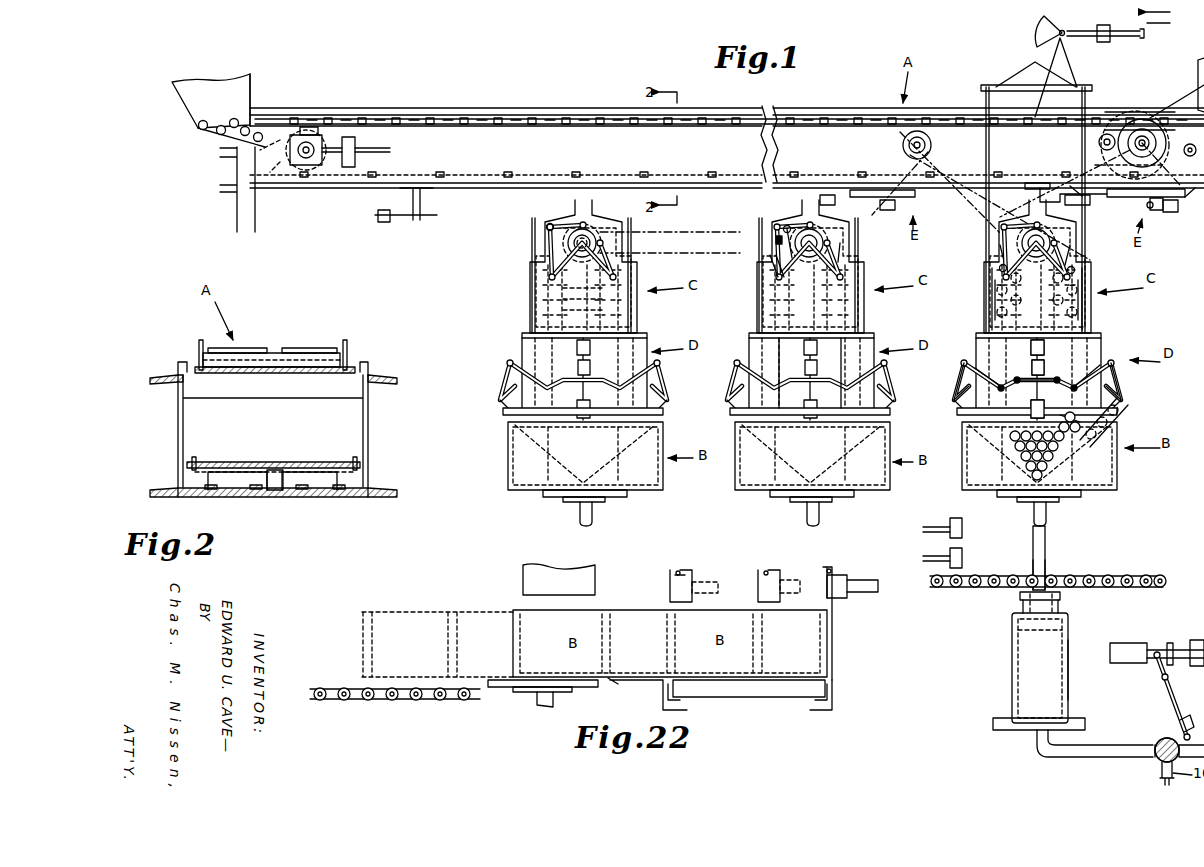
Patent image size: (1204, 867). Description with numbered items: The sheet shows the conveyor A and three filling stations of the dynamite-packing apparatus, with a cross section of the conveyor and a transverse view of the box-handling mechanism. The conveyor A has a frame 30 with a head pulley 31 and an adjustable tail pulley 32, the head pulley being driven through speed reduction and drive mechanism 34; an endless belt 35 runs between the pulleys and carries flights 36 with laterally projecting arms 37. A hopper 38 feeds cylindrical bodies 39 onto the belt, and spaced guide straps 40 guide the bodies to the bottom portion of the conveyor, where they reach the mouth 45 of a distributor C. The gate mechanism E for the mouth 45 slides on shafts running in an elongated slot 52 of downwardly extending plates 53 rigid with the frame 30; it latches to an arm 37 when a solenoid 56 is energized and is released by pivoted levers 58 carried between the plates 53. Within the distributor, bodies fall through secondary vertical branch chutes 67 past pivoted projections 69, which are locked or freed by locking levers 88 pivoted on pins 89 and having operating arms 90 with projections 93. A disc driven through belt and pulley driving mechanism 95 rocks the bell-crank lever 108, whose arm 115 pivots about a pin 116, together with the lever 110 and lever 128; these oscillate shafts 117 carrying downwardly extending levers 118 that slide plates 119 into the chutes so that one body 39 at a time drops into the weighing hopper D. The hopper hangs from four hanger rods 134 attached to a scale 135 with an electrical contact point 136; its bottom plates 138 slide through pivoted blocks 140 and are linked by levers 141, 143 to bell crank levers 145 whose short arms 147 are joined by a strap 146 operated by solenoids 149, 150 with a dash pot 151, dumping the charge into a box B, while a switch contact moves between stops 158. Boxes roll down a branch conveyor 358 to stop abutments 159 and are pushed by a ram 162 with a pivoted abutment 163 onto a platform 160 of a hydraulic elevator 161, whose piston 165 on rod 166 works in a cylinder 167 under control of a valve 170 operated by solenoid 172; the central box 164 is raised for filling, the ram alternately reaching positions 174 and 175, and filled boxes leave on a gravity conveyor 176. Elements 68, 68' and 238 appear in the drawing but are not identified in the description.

In FIG. 1, the frame 30 is at (832, 135).
In FIG. 2, the frame 30 is at (180, 405).
In FIG. 1, the head pulley 31 is at (1163, 133).
In FIG. 1, the adjustable tail pulley 32 is at (280, 155).
In FIG. 1, the speed reduction and drive mechanism 34 is at (1168, 97).
In FIG. 1, the endless belt 35 is at (433, 122).
In FIG. 2, the endless belt 35 is at (328, 350).
In FIG. 1, the flights 36 is at (483, 127).
In FIG. 2, the flights 36 is at (293, 350).
In FIG. 1, the laterally projecting arms 37 is at (550, 127).
In FIG. 2, the laterally projecting arms 37 is at (188, 360).
In FIG. 1, the hopper 38 is at (238, 95).
In FIG. 1, the cylindrical bodies 39 is at (208, 120).
In FIG. 2, the cylindrical bodies 39 is at (273, 360).
In FIG. 1, the guide straps 40 is at (1157, 88).
In FIG. 2, the guide straps 40 is at (215, 487).
In FIG. 1, the mouth 45 is at (1040, 187).
In FIG. 1, the elongated slot 52 is at (1177, 220).
In FIG. 1, the downwardly extending plates 53 is at (870, 200).
In FIG. 1, the solenoid 56 is at (1150, 207).
In FIG. 1, the pivoted levers 58 is at (847, 203).
In FIG. 1, the secondary vertical branch chutes 67 is at (990, 296).
In FIG. 1, the link 68 is at (1064, 198).
In FIG. 1, the link 68' is at (1042, 251).
In FIG. 1, the pivoted projections 69 is at (990, 316).
In FIG. 1, the locking levers 88 is at (583, 309).
In FIG. 1, the pins 89 is at (583, 298).
In FIG. 1, the operating arms 90 is at (583, 287).
In FIG. 1, the projections 93 is at (585, 238).
In FIG. 1, the belt and pulley driving mechanism 95 is at (895, 142).
In FIG. 1, the lever 108 is at (787, 226).
In FIG. 1, the lever 110 is at (850, 247).
In FIG. 1, the arm 115 is at (775, 240).
In FIG. 1, the pin 116 is at (550, 226).
In FIG. 1, the shafts 117 is at (997, 268).
In FIG. 1, the downwardly extending levers 118 is at (990, 283).
In FIG. 1, the plates 119 is at (829, 371).
In FIG. 1, the lever 128 is at (766, 258).
In FIG. 1, the hanger rods 134 is at (533, 242).
In FIG. 1, the scale 135 is at (1063, 24).
In FIG. 1, the electrical contact point 136 is at (1140, 32).
In FIG. 1, the bottom plates 138 is at (1097, 423).
In FIG. 22, the bottom plates 138 is at (533, 580).
In FIG. 1, the pivoted block 140 is at (1117, 407).
In FIG. 1, the lever 141 is at (967, 387).
In FIG. 1, the lever 143 is at (963, 373).
In FIG. 1, the bell crank lever 145 is at (983, 367).
In FIG. 1, the strap 146 is at (1027, 373).
In FIG. 1, the short arms 147 is at (1000, 377).
In FIG. 1, the solenoid 149 is at (1045, 364).
In FIG. 1, the solenoid 150 is at (1043, 342).
In FIG. 1, the dash pot 151 is at (1031, 402).
In FIG. 1, the stops 158 is at (1153, 570).
In FIG. 1, the stop abutments 159 is at (925, 560).
In FIG. 1, the platform 160 is at (615, 495).
In FIG. 22, the platform 160 is at (508, 689).
In FIG. 1, the hydraulic elevator mechanism 161 is at (998, 658).
In FIG. 22, the ram 162 is at (863, 590).
In FIG. 22, the pivoted abutment 163 is at (830, 617).
In FIG. 22, the box 164 is at (642, 625).
In FIG. 1, the piston 165 is at (1043, 628).
In FIG. 1, the rod 166 is at (1045, 523).
In FIG. 1, the cylinder 167 is at (1068, 682).
In FIG. 1, the valve 170 is at (1157, 740).
In FIG. 1, the solenoid 172 is at (1132, 647).
In FIG. 22, the position 174 is at (778, 570).
In FIG. 22, the position 175 is at (687, 570).
In FIG. 22, the gravity conveyor 176 is at (418, 701).
In FIG. 1, the hanger bracket 238 is at (422, 210).
In FIG. 22, the branch conveyor 358 is at (783, 690).